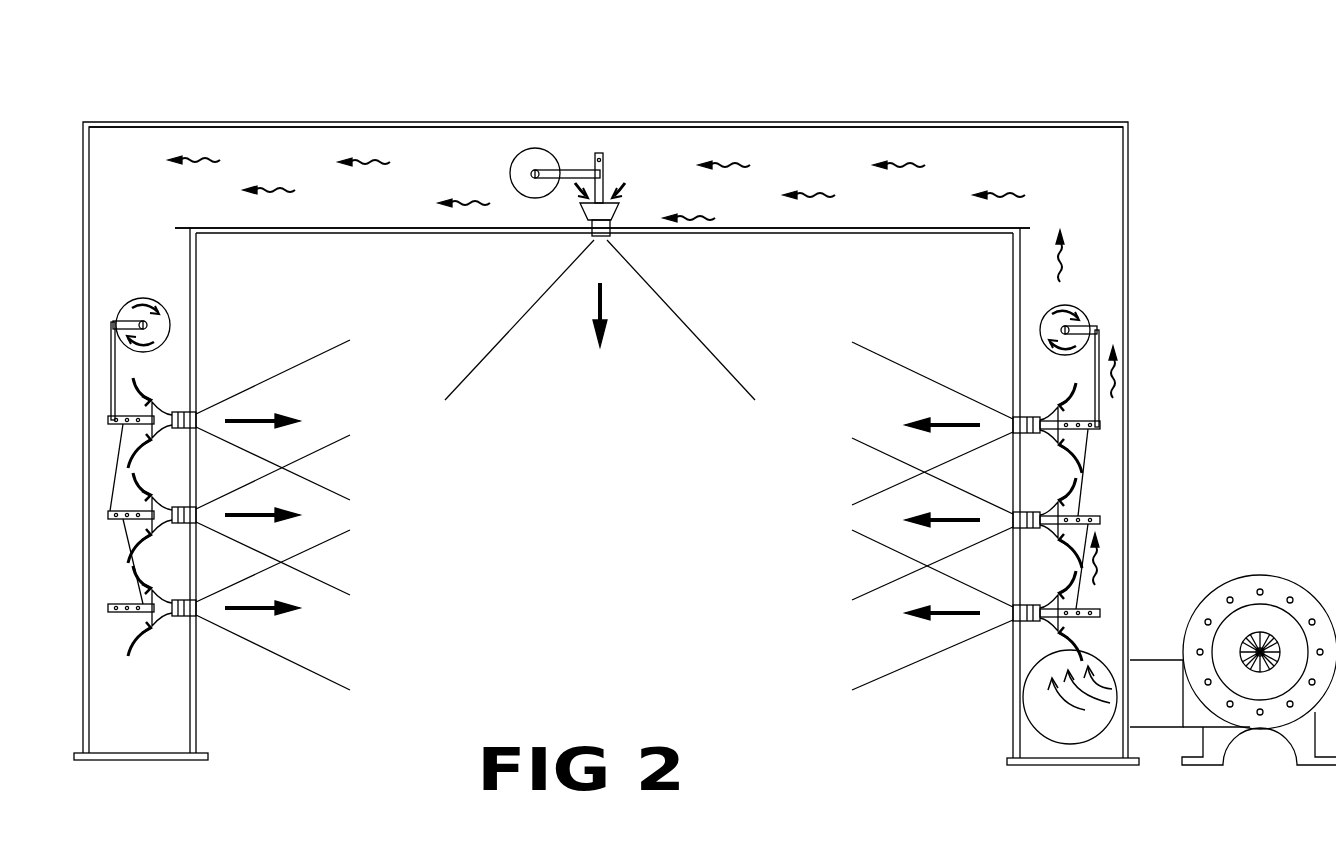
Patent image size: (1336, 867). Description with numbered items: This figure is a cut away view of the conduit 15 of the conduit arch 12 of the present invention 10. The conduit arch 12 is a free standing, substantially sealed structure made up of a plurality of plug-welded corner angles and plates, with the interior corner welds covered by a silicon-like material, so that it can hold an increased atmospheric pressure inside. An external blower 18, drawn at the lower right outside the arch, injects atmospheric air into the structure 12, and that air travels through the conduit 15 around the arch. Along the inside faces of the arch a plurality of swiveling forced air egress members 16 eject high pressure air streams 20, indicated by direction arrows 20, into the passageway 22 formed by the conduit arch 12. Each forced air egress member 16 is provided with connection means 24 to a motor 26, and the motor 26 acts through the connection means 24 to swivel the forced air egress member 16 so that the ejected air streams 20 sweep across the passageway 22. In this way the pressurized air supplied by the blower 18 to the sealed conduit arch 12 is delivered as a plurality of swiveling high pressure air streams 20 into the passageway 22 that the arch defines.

The present invention 10 is at (862, 110).
The conduit arch 12 is at (1128, 203).
The conduit 15 is at (1097, 166).
The swiveling forced air egress member 16 is at (1050, 622).
The external blower 18 is at (1233, 578).
The high pressure air streams 20 is at (990, 195).
The passageway 22 is at (760, 295).
The connection means 24 is at (1108, 340).
The motor 26 is at (1040, 328).